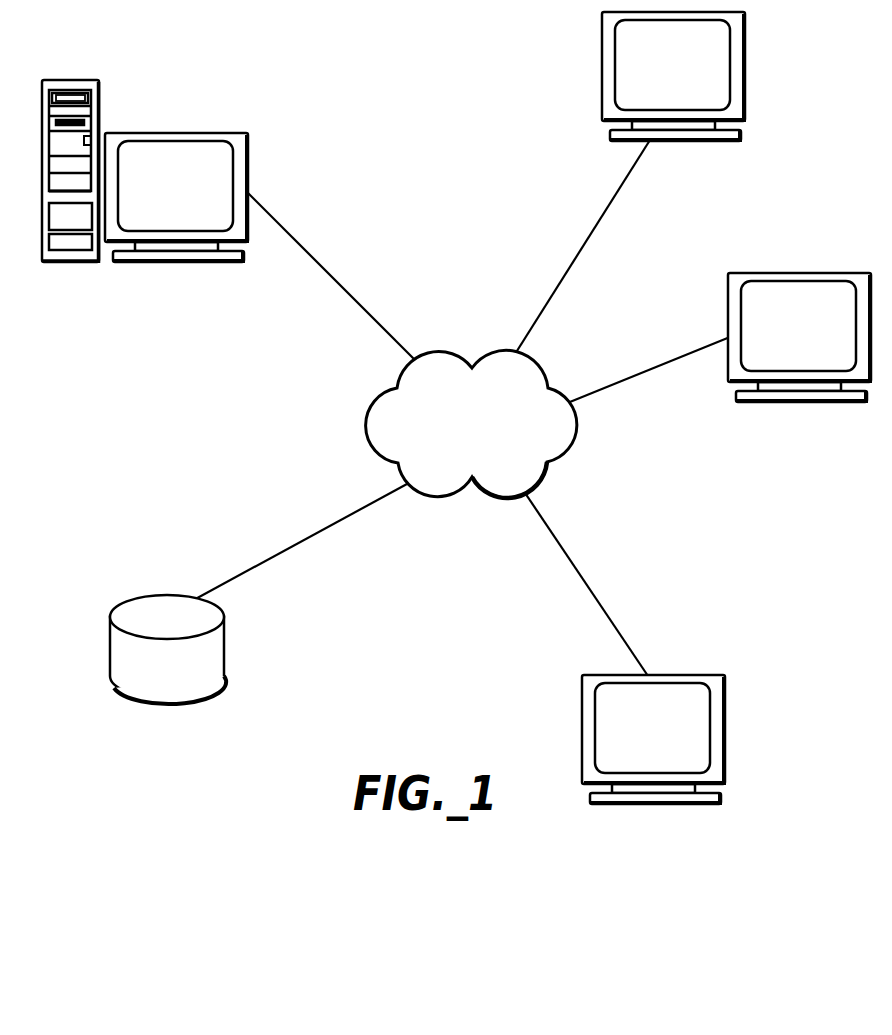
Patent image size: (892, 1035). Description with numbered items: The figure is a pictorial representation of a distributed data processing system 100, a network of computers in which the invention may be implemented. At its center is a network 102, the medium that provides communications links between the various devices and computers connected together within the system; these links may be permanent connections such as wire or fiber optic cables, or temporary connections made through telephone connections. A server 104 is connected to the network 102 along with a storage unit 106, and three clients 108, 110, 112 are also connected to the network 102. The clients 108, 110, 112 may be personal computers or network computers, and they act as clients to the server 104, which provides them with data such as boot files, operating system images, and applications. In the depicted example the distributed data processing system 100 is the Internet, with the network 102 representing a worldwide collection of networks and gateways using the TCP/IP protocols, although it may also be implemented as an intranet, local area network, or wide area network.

The distributed data processing system 100 is at (354, 57).
The network 102 is at (449, 435).
The server 104 is at (159, 330).
The storage unit 106 is at (188, 675).
The client 108 is at (693, 78).
The client 110 is at (819, 339).
The client 112 is at (674, 742).